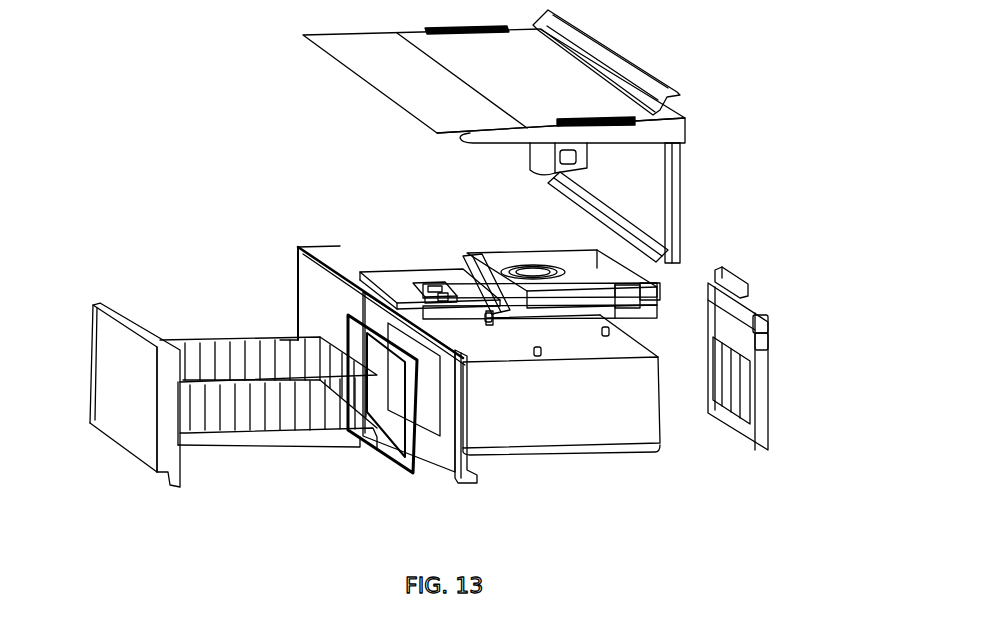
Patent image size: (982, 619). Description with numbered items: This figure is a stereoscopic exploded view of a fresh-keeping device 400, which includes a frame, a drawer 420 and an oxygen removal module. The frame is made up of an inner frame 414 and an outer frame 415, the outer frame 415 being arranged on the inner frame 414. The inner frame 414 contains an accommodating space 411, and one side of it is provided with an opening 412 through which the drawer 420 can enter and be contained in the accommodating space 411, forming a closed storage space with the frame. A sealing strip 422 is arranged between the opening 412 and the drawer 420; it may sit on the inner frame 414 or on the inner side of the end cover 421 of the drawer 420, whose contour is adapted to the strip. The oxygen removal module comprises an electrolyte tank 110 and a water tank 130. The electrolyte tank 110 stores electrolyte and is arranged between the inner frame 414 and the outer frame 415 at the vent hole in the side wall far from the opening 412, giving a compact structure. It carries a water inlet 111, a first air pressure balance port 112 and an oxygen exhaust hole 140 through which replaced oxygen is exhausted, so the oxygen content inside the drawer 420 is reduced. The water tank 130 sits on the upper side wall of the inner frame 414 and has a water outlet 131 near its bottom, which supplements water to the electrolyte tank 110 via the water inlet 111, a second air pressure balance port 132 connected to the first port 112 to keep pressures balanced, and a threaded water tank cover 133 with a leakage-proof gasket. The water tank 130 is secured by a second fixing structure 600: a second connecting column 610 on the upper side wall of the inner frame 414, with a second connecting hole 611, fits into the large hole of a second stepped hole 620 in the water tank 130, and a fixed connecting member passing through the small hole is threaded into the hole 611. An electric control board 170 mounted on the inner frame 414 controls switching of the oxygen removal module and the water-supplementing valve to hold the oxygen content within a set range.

The electrolyte tank 110 is at (762, 397).
The water inlet 111 is at (770, 350).
The first air pressure balance port 112 is at (770, 327).
The water tank 130 is at (560, 272).
The water outlet 131 is at (637, 312).
The second air pressure balance port 132 is at (643, 299).
The water tank cover 133 is at (523, 267).
The oxygen exhaust hole 140 is at (720, 272).
The electric control board 170 is at (362, 256).
The fresh-keeping device 400 is at (421, 336).
The accommodating space 411 is at (438, 427).
The opening 412 is at (427, 450).
The inner frame 414 is at (527, 420).
The outer frame 415 is at (357, 73).
The drawer 420 is at (217, 330).
The end cover 421 is at (102, 375).
The sealing strip 422 is at (398, 468).
The second fixing structure 600 is at (430, 229).
The second connecting column 610 is at (433, 272).
The second connecting hole 611 is at (457, 268).
The second stepped hole 620 is at (497, 265).